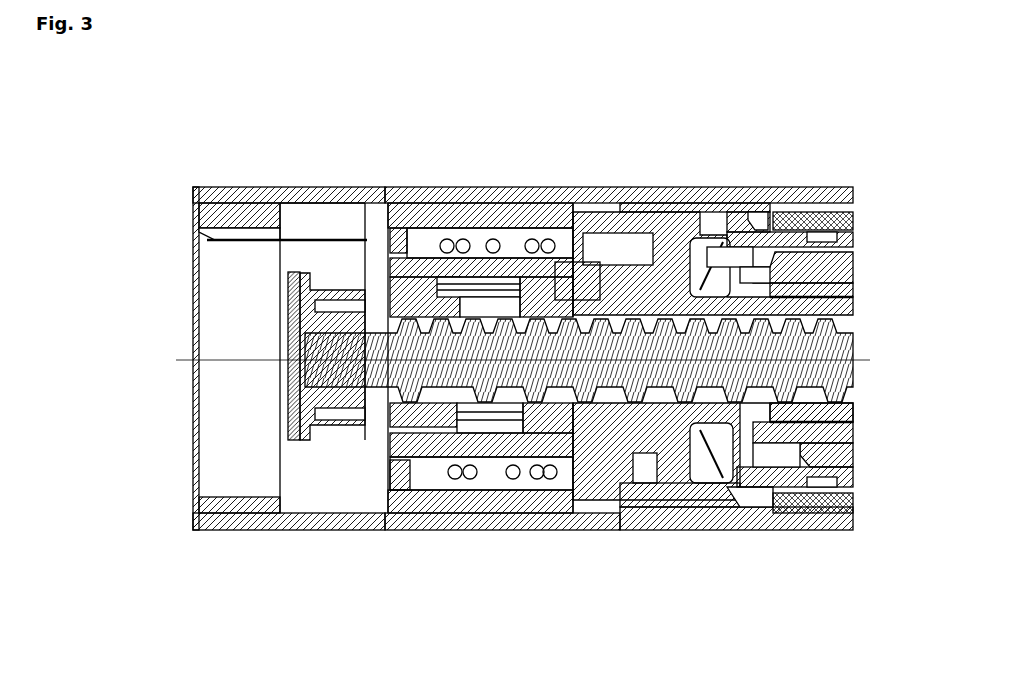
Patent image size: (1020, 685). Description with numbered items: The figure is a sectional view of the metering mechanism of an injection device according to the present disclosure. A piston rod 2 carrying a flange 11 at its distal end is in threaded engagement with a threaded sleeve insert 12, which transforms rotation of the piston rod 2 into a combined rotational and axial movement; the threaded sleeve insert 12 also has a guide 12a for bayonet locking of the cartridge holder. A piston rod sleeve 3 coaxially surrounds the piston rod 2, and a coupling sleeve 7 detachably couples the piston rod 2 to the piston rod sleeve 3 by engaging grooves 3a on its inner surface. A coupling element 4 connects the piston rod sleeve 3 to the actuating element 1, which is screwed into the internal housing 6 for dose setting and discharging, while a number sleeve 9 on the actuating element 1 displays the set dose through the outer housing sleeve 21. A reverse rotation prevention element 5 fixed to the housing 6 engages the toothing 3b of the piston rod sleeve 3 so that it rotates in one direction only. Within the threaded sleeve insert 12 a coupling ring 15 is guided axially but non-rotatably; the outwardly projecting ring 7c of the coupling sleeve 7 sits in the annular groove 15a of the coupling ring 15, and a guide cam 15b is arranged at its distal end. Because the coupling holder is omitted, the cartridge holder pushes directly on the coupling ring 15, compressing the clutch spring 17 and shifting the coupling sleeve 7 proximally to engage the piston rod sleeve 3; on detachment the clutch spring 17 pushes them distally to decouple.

The actuating element 1 is at (820, 267).
The piston rod 2 is at (571, 365).
The piston rod sleeve 3 is at (656, 490).
The grooves 3a is at (700, 222).
The toothing 3b is at (685, 480).
The coupling element 4 is at (853, 297).
The reverse rotation prevention element 5 is at (748, 495).
The internal housing 6 is at (852, 238).
The coupling sleeve 7 is at (633, 250).
The outwardly projecting ring 7c is at (562, 275).
The number sleeve 9 is at (820, 217).
The flange 11 is at (290, 445).
The threaded sleeve insert 12 is at (425, 430).
The guide 12a is at (310, 497).
The coupling ring 15 is at (470, 245).
The annular groove 15a is at (535, 305).
The guide cam 15b is at (395, 233).
The clutch spring 17 is at (497, 247).
The outer housing sleeve 21 is at (790, 200).